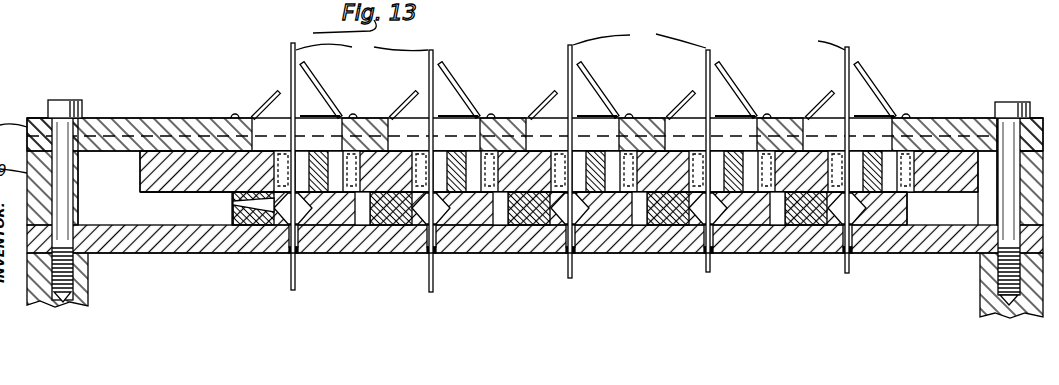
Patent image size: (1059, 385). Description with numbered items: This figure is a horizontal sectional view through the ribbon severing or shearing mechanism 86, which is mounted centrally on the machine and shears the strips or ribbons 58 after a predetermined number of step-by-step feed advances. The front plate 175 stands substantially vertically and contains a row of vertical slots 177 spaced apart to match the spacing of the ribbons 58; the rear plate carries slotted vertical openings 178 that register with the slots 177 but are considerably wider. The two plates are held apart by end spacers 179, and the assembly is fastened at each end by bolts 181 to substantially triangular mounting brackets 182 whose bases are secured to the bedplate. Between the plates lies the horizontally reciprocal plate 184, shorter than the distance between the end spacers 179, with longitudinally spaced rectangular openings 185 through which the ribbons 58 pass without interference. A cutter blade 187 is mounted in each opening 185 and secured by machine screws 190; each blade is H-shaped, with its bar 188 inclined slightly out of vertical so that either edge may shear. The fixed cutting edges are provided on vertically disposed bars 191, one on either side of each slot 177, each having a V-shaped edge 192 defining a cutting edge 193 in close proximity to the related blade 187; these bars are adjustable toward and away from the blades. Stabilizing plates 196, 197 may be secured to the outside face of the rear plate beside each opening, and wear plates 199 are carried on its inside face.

The strips or ribbons 58 is at (570, 40).
The ribbon severing or shearing mechanism 86 is at (1041, 116).
The front plate 175 is at (143, 243).
The vertical slots 177 is at (296, 270).
The slotted vertical openings 178 is at (343, 124).
The end spacers 179 is at (995, 212).
The bolts 181 is at (65, 100).
The mounting brackets 182 is at (92, 298).
The reciprocal plate 184 is at (140, 172).
The rectangular openings 185 is at (292, 137).
The cutter blades 187 is at (478, 224).
The bar of the H 188 is at (436, 226).
The machine screws 190 is at (357, 153).
The vertically disposed bars 191 is at (233, 218).
The V-shaped edge 192 is at (287, 222).
The cutting edge 193 is at (262, 201).
The stabilizing plate 196 is at (540, 102).
The stabilizing plate 197 is at (320, 85).
The wear plates 199 is at (88, 130).